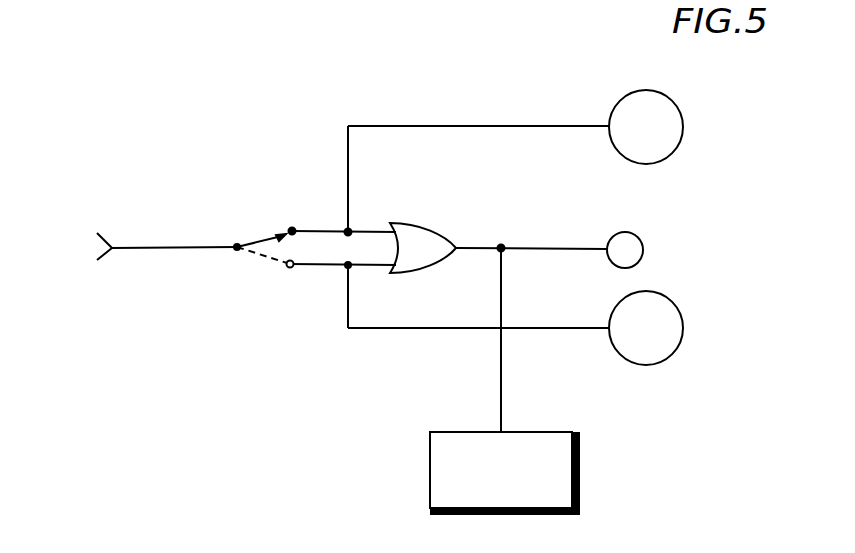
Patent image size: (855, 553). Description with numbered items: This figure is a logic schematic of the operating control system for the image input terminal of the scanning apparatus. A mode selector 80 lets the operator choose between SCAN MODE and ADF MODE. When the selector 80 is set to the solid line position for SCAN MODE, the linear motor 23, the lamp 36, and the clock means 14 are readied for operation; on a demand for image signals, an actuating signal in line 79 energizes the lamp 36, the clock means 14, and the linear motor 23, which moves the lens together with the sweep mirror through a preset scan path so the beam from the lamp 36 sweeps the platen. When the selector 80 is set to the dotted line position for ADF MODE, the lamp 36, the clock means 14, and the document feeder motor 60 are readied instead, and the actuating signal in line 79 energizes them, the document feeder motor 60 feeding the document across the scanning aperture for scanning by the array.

The clock means 14 is at (578, 467).
The linear motor 23 is at (627, 93).
The lamp 36 is at (614, 235).
The document feeder motor 60 is at (613, 308).
The line 79 is at (178, 250).
The mode selector 80 is at (248, 232).